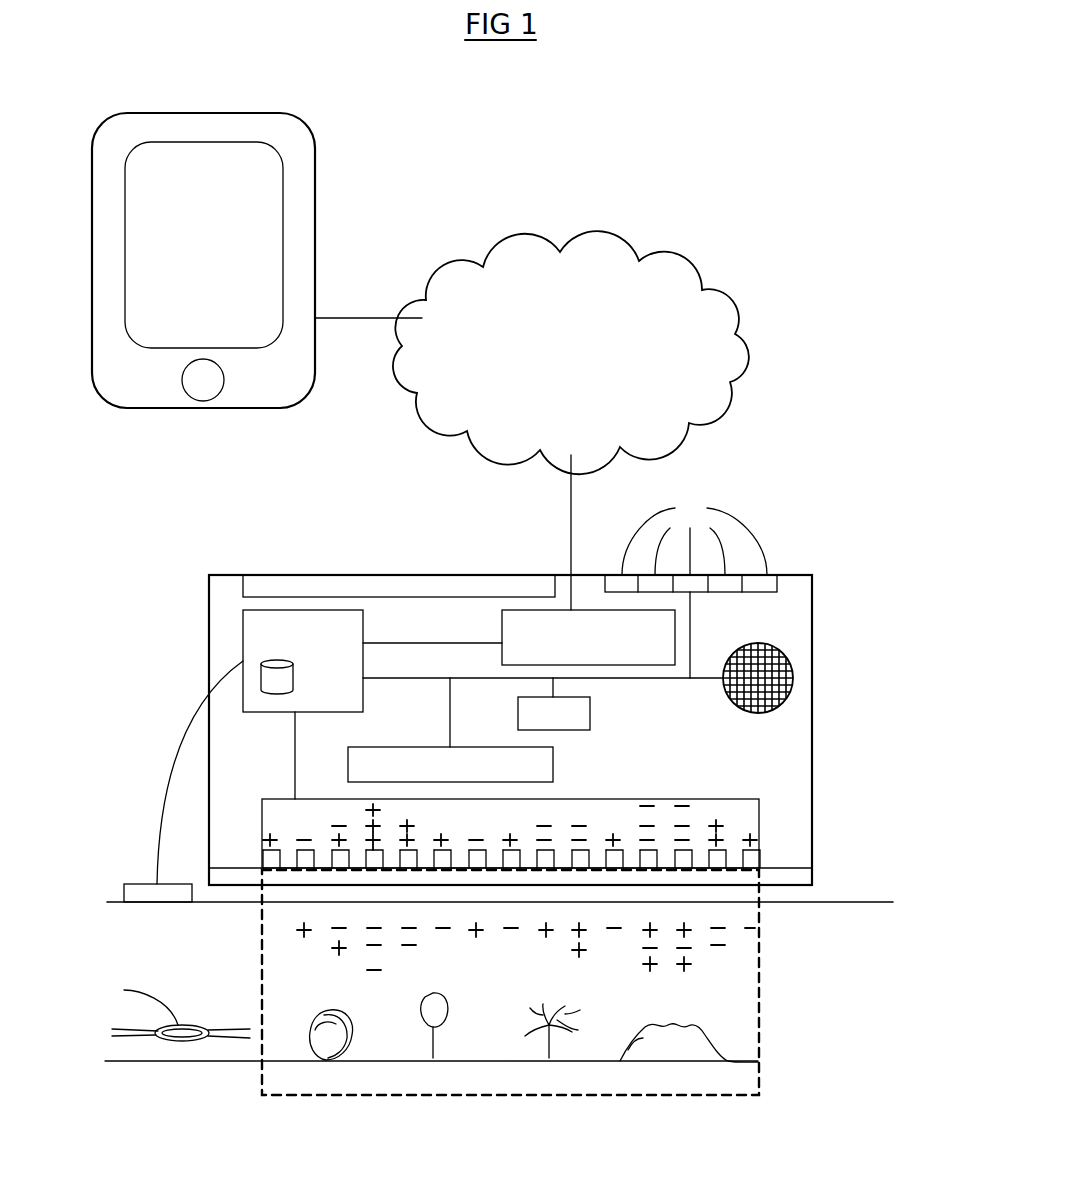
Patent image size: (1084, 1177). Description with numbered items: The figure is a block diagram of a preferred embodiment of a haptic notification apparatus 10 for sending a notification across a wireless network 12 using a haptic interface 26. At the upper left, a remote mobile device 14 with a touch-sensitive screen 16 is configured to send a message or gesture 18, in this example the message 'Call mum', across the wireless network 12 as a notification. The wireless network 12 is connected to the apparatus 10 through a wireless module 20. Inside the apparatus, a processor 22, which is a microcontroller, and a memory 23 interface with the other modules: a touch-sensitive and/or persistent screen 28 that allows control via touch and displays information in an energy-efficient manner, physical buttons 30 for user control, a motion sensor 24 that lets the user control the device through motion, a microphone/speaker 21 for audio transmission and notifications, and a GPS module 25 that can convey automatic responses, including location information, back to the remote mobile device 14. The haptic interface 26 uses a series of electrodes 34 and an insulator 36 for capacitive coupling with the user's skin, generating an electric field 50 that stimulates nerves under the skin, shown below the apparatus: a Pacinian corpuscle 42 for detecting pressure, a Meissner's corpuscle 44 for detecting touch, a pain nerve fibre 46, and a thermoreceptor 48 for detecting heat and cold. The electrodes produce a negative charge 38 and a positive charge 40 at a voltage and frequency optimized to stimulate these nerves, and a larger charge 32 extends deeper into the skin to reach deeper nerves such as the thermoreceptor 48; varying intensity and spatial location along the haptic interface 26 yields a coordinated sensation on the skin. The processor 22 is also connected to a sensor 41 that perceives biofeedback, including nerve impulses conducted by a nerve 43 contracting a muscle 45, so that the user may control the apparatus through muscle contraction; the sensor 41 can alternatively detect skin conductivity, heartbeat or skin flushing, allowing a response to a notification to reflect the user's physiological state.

The haptic notification apparatus 10 is at (177, 697).
The wireless network 12 is at (571, 352).
The remote mobile device 14 is at (332, 180).
The touch-sensitive screen 16 is at (244, 268).
The message or gesture 18 is at (207, 167).
The wireless module 20 is at (502, 630).
The microphone/speaker 21 is at (740, 665).
The processor 22 is at (365, 694).
The memory 23 is at (270, 694).
The motion sensor 24 is at (553, 773).
The GPS module 25 is at (590, 713).
The haptic interface 26 is at (690, 799).
The touch-sensitive and/or persistent screen 28 is at (293, 575).
The physical buttons 30 is at (200, 401).
The larger charge 32 is at (638, 806).
The electrodes 34 is at (760, 858).
The insulator 36 is at (812, 868).
The negative charge 38 is at (270, 925).
The positive charge 40 is at (270, 845).
The sensor 41 is at (142, 884).
The Pacinian corpuscle 42 is at (312, 1042).
The nerve 43 is at (176, 1025).
The Meissner's corpuscle 44 is at (433, 1042).
The muscle 45 is at (182, 1042).
The pain nerve fibre 46 is at (549, 1042).
The thermoreceptor 48 is at (637, 1042).
The electric field 50 is at (760, 973).